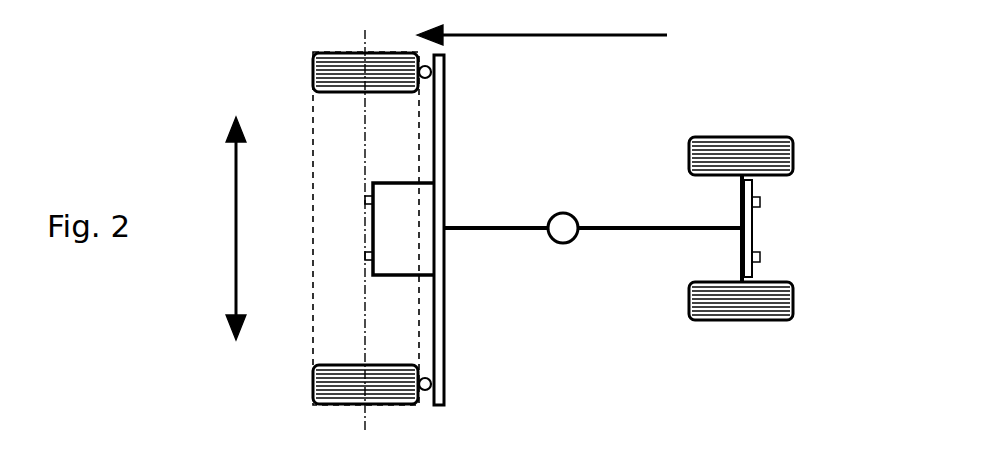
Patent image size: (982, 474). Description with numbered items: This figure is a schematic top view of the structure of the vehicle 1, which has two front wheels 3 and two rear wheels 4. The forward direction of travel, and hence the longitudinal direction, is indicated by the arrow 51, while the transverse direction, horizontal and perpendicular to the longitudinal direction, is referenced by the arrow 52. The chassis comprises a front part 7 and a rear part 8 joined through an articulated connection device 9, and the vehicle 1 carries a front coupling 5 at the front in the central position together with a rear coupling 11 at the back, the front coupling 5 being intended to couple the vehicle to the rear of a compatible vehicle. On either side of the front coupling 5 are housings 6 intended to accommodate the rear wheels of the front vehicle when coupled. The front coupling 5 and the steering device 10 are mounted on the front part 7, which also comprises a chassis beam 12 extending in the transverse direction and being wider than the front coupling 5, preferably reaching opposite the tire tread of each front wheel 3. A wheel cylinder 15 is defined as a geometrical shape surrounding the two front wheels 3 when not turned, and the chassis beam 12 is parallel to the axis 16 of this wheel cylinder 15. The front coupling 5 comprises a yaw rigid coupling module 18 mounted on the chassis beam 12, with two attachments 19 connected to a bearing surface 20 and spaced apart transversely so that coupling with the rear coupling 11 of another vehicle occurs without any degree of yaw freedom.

The vehicle 1 is at (630, 335).
The front wheels 3 is at (347, 63).
The rear wheels 4 is at (760, 140).
The front coupling 5 is at (350, 230).
The housings 6 is at (390, 142).
The front part 7 is at (461, 222).
The rear part 8 is at (683, 225).
The articulated connection device 9 is at (558, 216).
The steering device 10 is at (433, 74).
The rear coupling 11 is at (765, 228).
The chassis beam 12 is at (439, 108).
The wheel cylinder 15 is at (320, 258).
The axis of the wheel cylinder 16 is at (362, 420).
The yaw rigid coupling module 18 is at (412, 263).
The attachments 19 is at (365, 200).
The bearing surface 20 is at (372, 215).
The arrow indicating forward direction of travel 51 is at (580, 37).
The arrow indicating transverse direction 52 is at (235, 198).